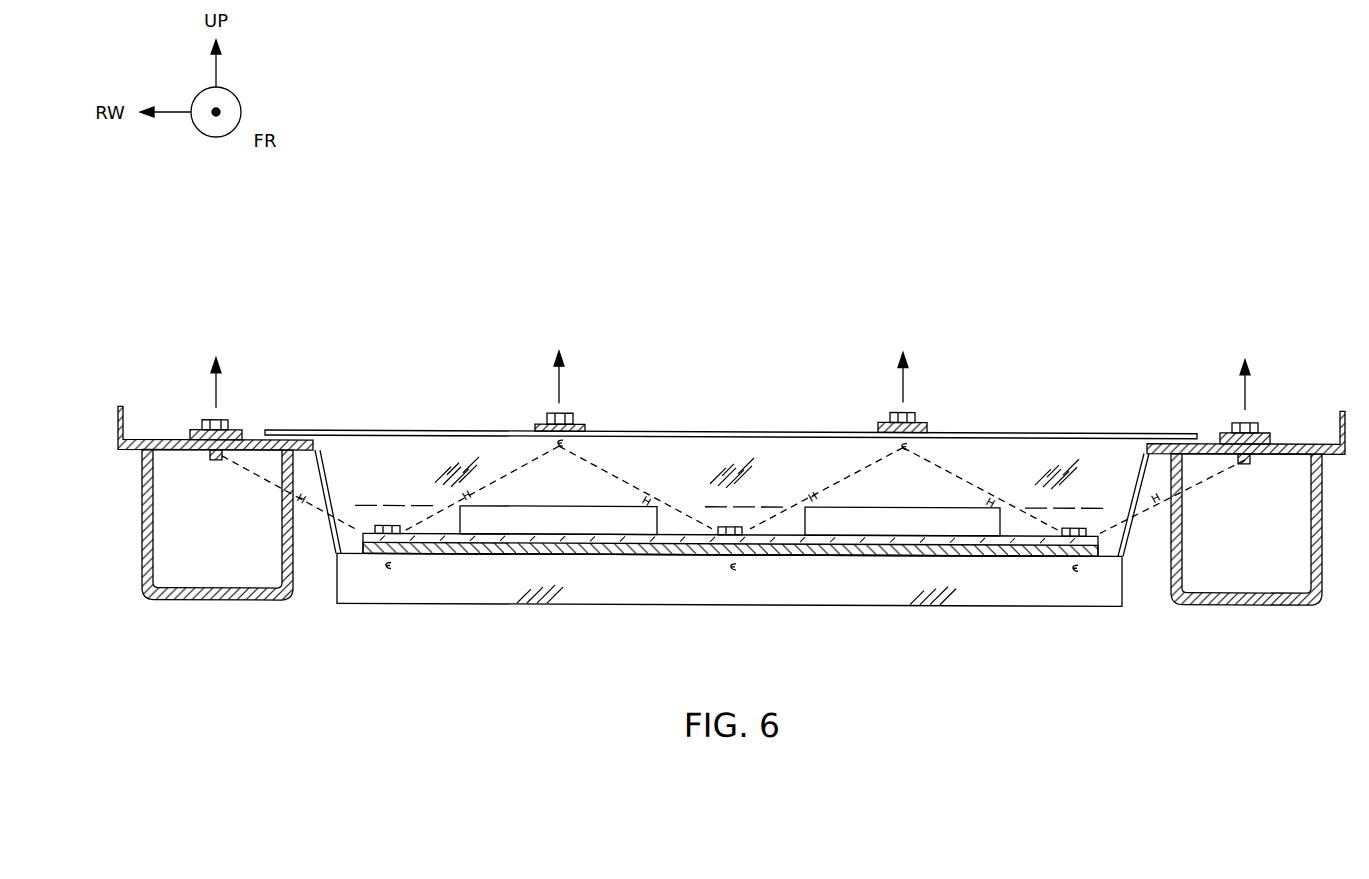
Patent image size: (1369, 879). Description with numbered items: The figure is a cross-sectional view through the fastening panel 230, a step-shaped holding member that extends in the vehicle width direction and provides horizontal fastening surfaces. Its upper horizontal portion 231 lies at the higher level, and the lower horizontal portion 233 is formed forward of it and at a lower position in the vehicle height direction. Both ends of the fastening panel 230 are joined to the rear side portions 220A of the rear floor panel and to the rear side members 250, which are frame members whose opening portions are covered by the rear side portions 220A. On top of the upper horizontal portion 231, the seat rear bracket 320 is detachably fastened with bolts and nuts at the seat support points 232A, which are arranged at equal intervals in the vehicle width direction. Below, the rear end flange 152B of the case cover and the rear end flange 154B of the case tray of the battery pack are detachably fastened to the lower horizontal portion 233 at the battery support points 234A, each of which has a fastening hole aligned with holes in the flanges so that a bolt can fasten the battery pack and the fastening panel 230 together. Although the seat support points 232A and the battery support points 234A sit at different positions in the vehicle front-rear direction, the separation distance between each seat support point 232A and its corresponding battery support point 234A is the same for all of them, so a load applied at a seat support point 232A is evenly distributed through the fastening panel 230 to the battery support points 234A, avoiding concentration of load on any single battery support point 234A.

The fastening panel 230 is at (385, 428).
The upper horizontal portion 231 is at (656, 430).
The rear side portion 220A is at (1316, 440).
The rear side member 250 is at (190, 601).
The seat rear bracket 320 is at (230, 425).
The seat support point 232A is at (212, 459).
The lower horizontal portion 233 is at (526, 537).
The battery support point 234A is at (388, 556).
The rear end flange of the case cover 152B is at (847, 552).
The rear end flange of the case tray 154B is at (848, 560).